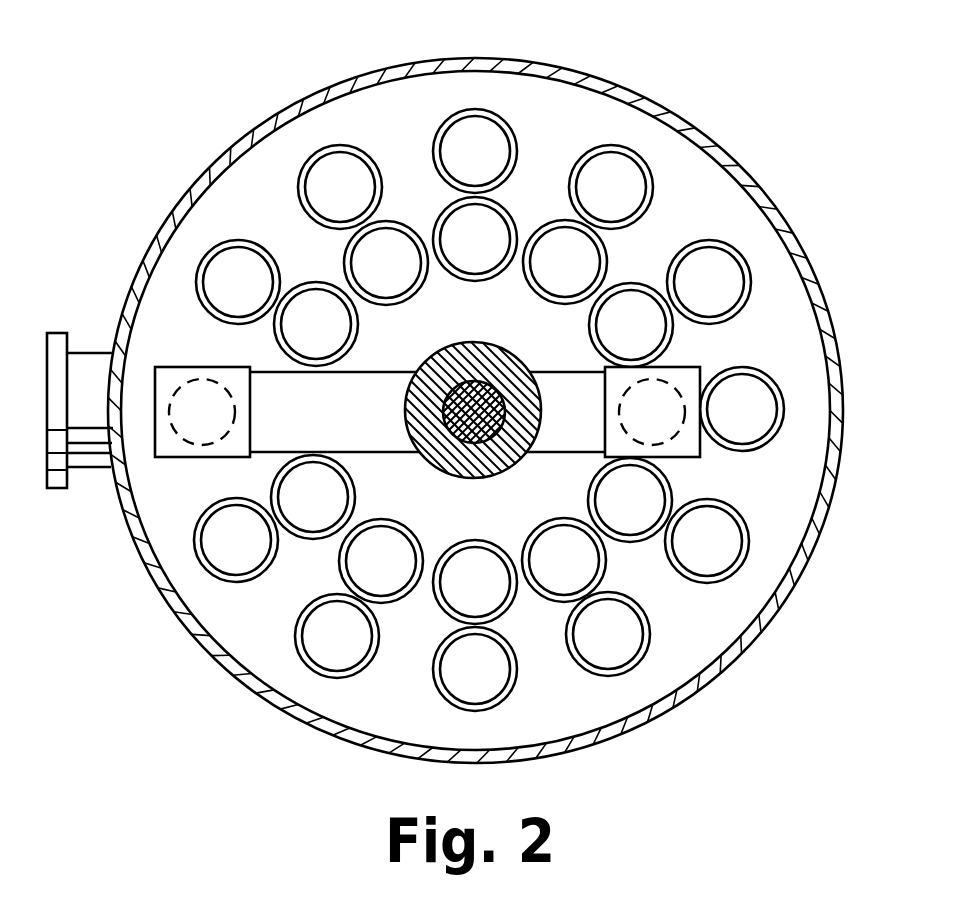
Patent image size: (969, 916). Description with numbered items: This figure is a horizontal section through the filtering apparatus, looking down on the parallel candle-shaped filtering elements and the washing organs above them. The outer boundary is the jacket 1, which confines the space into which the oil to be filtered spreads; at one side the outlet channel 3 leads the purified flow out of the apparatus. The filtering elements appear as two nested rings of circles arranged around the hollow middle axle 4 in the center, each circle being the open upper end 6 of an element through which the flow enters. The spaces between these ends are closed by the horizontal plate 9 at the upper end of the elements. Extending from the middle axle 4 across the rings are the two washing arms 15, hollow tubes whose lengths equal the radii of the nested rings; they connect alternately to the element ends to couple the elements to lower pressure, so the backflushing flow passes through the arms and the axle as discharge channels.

The jacket 1 is at (210, 172).
The outlet channel 3 is at (90, 357).
The middle axle 4 is at (437, 453).
The upper end 6 is at (437, 132).
The horizontal plate 9 is at (185, 592).
The washing arm 15 is at (283, 447).